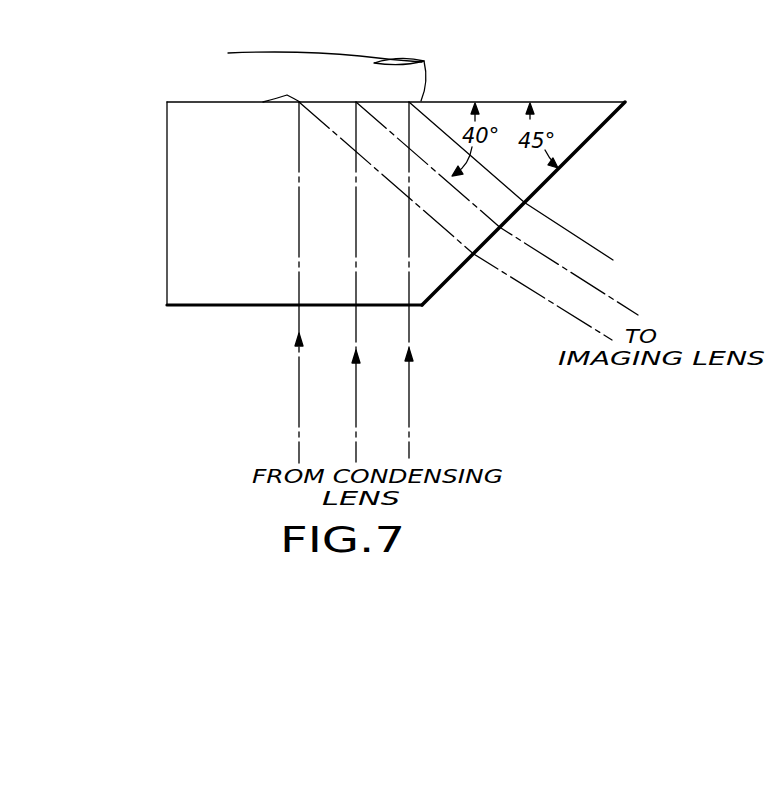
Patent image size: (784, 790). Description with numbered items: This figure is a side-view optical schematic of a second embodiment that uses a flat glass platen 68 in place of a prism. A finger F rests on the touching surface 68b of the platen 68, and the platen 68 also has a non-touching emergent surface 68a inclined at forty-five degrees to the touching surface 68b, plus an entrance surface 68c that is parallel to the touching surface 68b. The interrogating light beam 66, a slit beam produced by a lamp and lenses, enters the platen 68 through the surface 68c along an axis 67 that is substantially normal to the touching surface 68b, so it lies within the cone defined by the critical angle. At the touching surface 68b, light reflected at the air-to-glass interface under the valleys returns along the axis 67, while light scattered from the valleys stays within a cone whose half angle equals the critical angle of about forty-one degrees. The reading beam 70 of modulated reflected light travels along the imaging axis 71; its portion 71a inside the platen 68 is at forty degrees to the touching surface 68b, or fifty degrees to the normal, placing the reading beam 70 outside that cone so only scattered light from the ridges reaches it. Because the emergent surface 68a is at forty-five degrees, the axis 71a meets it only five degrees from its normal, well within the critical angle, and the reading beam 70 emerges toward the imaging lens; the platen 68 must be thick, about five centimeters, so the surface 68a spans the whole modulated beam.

The glass platen 68 is at (186, 211).
The non-touching surface 68a is at (593, 134).
The touching surface 68b is at (507, 102).
The entrance surface 68c is at (203, 308).
The interrogating light beam 66 is at (318, 352).
The axis of the interrogating light beam 67 is at (357, 414).
The reading beam 70 is at (593, 264).
The imaging axis 71 is at (603, 291).
The portion of the imaging axis within the platen 71a is at (463, 196).
The finger F is at (331, 63).